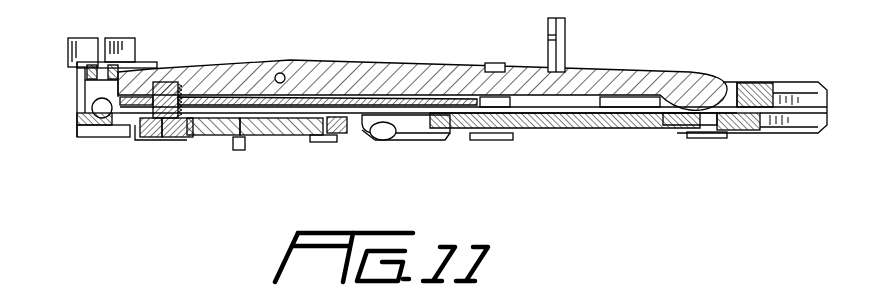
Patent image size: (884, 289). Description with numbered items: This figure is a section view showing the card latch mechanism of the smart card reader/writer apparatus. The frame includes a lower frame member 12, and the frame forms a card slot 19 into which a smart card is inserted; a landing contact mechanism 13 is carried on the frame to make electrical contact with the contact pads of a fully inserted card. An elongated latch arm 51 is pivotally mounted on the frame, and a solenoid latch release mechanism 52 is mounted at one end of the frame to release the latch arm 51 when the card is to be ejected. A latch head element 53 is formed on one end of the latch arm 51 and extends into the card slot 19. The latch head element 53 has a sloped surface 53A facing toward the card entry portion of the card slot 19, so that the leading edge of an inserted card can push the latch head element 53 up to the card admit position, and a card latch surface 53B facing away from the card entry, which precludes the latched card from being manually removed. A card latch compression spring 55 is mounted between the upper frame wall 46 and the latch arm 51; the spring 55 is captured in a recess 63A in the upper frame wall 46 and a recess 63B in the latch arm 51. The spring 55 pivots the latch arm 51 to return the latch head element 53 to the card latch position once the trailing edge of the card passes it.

The lower frame member 12 is at (752, 66).
The landing contact mechanism 13 is at (537, 143).
The card slot 19 is at (767, 103).
The upper frame wall 46 is at (213, 128).
The latch arm 51 is at (612, 72).
The solenoid latch release mechanism 52 is at (70, 98).
The latch head element 53 is at (680, 110).
The sloped surface 53A is at (690, 110).
The card latch surface 53B is at (640, 113).
The card latch compression spring 55 is at (160, 122).
The recess 63A is at (193, 128).
The recess 63B is at (182, 83).